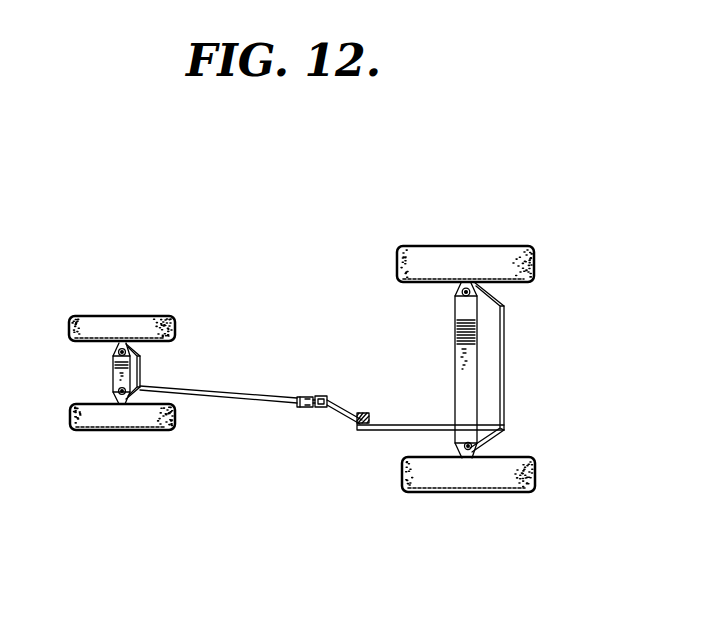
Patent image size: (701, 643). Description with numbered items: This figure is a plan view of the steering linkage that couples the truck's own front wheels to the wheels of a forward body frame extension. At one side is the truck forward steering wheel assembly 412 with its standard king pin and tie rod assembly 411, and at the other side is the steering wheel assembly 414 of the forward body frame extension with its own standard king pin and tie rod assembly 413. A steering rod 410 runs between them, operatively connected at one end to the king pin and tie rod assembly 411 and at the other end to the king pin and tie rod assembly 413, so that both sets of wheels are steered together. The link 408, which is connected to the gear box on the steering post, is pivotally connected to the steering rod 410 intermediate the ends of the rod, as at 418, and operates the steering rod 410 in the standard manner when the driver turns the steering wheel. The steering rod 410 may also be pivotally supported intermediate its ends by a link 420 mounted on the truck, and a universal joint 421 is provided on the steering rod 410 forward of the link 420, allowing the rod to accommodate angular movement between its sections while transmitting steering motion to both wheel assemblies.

The link 408 is at (369, 415).
The steering rod 410 is at (432, 430).
The king pin and tie rod assembly 411 is at (488, 440).
The truck forward steering wheel assembly 412 is at (532, 489).
The king pin and tie rod assembly 413 is at (118, 391).
The steering wheel assembly 414 is at (173, 425).
The pivotal connection 418 is at (358, 432).
The link 420 is at (327, 396).
The universal joint 421 is at (298, 408).